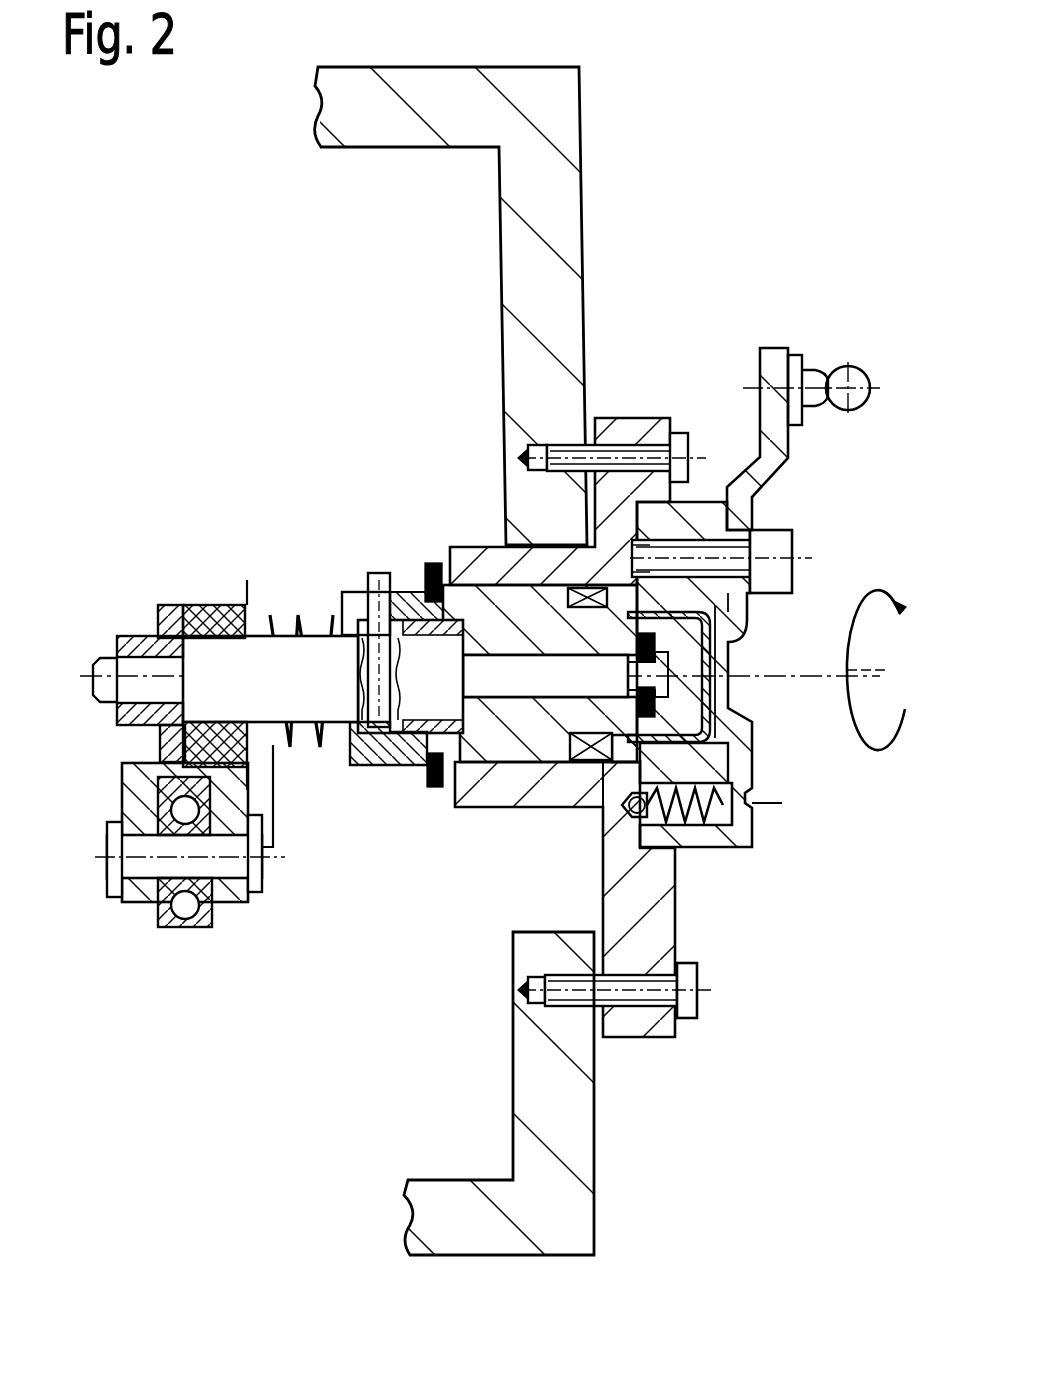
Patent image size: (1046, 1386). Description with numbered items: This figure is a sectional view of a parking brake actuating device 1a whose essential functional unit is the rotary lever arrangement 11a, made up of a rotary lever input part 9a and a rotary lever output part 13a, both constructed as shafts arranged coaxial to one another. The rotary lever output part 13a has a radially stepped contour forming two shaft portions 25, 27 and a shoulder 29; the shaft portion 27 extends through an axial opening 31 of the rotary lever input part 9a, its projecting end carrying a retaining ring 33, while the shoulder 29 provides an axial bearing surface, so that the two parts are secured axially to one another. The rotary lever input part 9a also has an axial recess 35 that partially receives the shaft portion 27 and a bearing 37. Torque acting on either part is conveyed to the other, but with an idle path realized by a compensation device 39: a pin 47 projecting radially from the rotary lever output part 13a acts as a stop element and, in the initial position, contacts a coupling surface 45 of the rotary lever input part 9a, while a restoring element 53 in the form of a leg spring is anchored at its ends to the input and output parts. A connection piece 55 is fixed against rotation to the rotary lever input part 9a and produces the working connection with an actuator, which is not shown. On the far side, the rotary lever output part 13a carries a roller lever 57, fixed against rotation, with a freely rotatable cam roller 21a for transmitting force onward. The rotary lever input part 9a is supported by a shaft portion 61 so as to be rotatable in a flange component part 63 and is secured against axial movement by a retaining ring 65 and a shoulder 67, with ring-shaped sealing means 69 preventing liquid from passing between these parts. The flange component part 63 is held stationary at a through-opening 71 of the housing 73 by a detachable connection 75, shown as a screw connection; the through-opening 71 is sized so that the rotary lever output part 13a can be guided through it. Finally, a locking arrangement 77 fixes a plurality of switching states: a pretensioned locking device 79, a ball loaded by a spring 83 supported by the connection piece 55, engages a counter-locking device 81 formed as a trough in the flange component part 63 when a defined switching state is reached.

The parking brake actuating device 1a is at (707, 1143).
The rotary lever input part 9a is at (705, 500).
The rotary lever arrangement 11a is at (345, 793).
The rotary lever output part 13a is at (259, 596).
The cam roller 21a is at (190, 927).
The shaft portion 25 is at (316, 614).
The shaft portion 27 is at (490, 692).
The shoulder 29 is at (462, 688).
The axial opening 31 is at (535, 735).
The retaining ring 33 is at (718, 632).
The axial recess 35 is at (375, 766).
The bearing 37 is at (418, 620).
The compensation device 39 is at (317, 768).
The coupling surface 45 is at (355, 590).
The pin 47 is at (382, 588).
The restoring element 53 is at (296, 634).
The connection piece 55 is at (790, 465).
The roller lever 57 is at (122, 782).
The shaft portion 61 is at (436, 790).
The flange component part 63 is at (680, 917).
The retaining ring 65 is at (433, 563).
The shoulder 67 is at (618, 500).
The sealing means 69 is at (592, 762).
The through-opening 71 is at (522, 545).
The housing 73 is at (462, 92).
The detachable connection 75 is at (700, 995).
The locking arrangement 77 is at (705, 857).
The locking device 79 is at (648, 780).
The counter-locking device 81 is at (635, 818).
The spring 83 is at (735, 800).